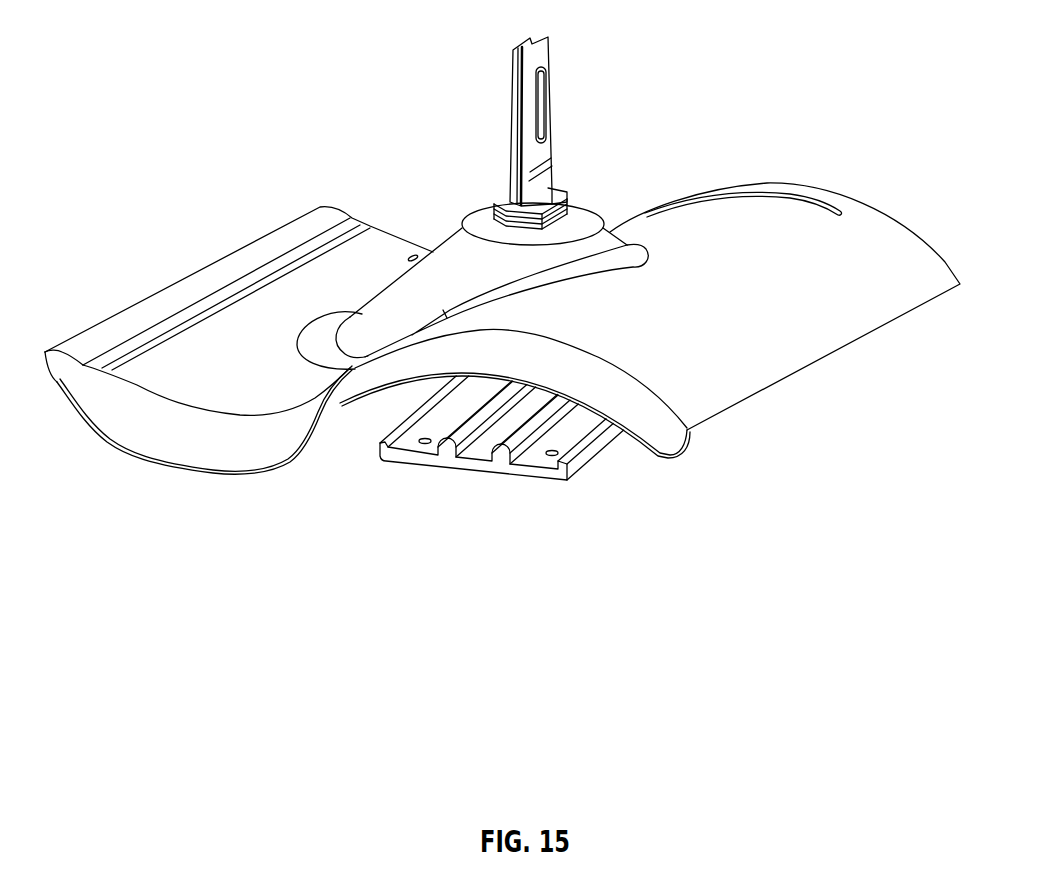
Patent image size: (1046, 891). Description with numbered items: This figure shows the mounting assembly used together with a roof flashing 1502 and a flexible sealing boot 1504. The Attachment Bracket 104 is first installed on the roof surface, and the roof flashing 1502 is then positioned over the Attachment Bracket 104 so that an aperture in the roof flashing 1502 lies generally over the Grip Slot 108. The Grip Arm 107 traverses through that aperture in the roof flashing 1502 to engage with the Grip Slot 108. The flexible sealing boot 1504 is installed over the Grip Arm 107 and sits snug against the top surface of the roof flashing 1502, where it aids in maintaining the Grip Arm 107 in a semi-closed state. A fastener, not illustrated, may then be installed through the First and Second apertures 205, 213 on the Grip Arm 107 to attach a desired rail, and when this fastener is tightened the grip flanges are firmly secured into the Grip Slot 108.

The Grip Arm 107 is at (557, 114).
The First aperture 205 is at (556, 89).
The Second aperture 213 is at (507, 105).
The sealing boot 1504 is at (464, 200).
The roof flashing 1502 is at (773, 175).
The Attachment Bracket 104 is at (624, 448).
The Grip Slot 108 is at (477, 484).